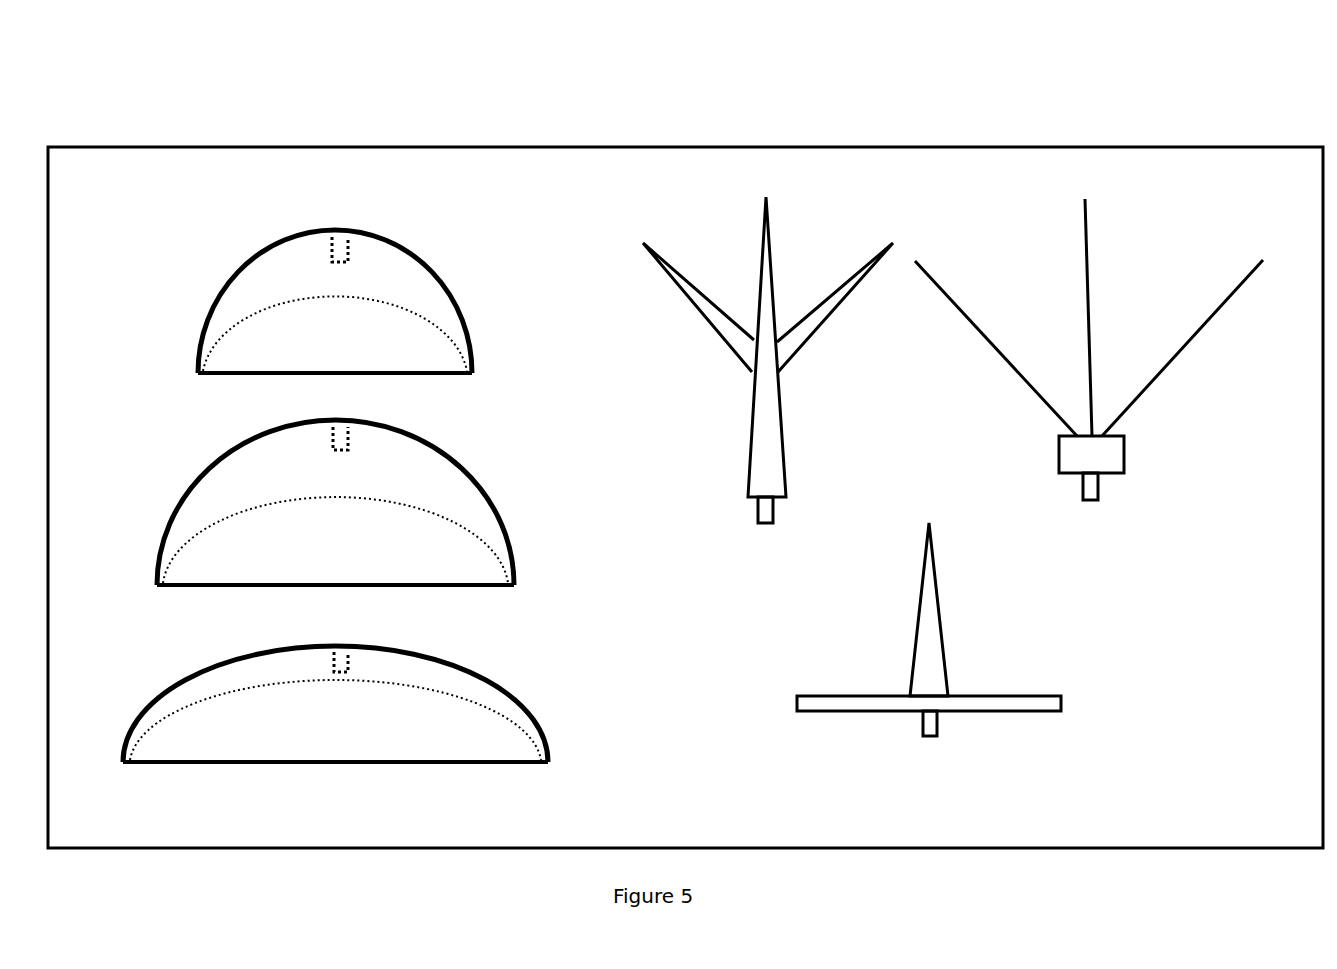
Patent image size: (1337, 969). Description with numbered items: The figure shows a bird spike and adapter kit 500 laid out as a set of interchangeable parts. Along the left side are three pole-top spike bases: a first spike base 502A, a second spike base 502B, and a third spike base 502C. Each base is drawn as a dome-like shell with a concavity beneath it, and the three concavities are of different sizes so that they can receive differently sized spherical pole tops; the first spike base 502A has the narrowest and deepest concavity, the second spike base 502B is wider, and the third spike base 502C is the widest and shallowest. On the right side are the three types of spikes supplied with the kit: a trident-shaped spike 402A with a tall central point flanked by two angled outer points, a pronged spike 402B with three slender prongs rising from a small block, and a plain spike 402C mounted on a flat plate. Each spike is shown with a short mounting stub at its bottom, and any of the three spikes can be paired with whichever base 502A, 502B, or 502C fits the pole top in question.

The bird spike and adapter kit 500 is at (1173, 47).
The first spike base 502A is at (253, 273).
The second spike base 502B is at (215, 497).
The third spike base 502C is at (203, 702).
The trident-shaped spike 402A is at (748, 470).
The pronged spike 402B is at (1065, 458).
The spike 402C is at (909, 672).